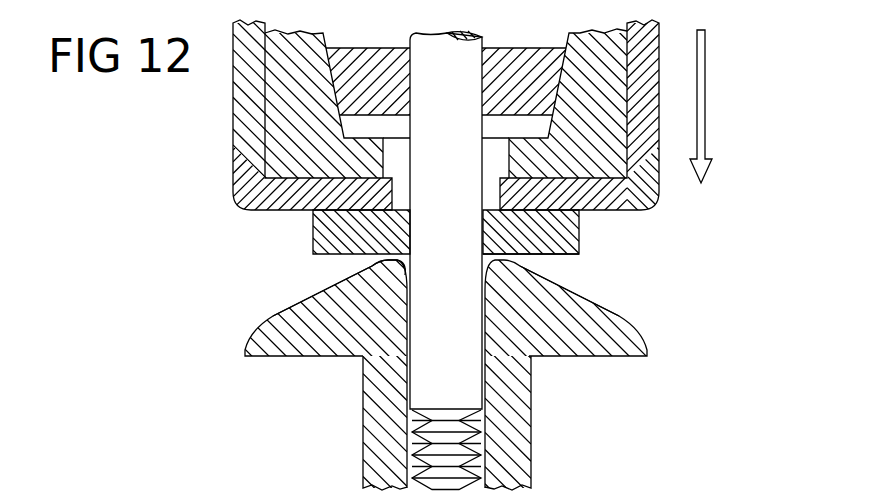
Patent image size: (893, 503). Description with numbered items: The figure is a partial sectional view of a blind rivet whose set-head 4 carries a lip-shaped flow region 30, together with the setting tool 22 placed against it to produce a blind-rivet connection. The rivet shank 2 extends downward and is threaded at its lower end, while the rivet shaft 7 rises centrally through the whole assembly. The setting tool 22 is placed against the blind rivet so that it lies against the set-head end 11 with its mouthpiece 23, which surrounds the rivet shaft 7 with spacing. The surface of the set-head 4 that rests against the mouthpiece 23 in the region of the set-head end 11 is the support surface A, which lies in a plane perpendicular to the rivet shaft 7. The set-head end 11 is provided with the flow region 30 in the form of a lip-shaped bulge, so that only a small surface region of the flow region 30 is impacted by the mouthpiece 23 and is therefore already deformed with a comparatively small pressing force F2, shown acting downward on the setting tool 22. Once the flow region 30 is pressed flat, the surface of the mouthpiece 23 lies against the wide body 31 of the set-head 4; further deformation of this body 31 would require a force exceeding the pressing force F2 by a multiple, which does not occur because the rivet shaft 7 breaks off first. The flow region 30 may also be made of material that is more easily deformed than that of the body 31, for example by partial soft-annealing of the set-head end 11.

The rivet shank 2 is at (372, 437).
The set-head 4 is at (622, 337).
The rivet shaft 7 is at (453, 105).
The set-head end 11 is at (579, 283).
The setting tool 22 is at (229, 125).
The mouthpiece 23 is at (567, 232).
The flow region 30 is at (377, 263).
The body 31 is at (283, 316).
The support surface A is at (518, 259).
The pressing force F2 is at (703, 98).